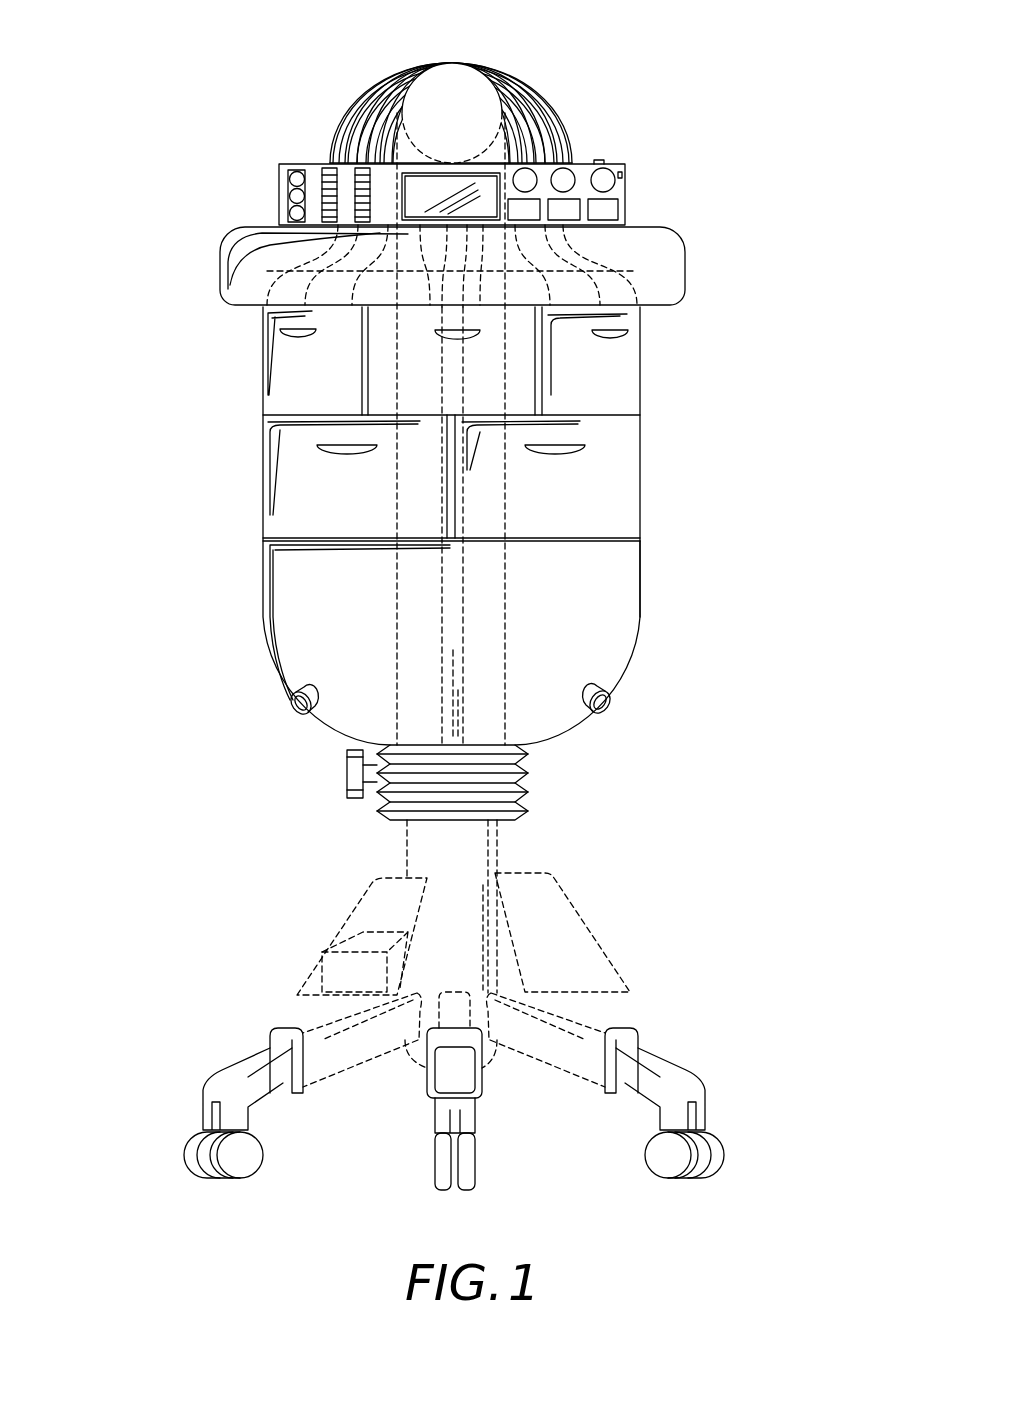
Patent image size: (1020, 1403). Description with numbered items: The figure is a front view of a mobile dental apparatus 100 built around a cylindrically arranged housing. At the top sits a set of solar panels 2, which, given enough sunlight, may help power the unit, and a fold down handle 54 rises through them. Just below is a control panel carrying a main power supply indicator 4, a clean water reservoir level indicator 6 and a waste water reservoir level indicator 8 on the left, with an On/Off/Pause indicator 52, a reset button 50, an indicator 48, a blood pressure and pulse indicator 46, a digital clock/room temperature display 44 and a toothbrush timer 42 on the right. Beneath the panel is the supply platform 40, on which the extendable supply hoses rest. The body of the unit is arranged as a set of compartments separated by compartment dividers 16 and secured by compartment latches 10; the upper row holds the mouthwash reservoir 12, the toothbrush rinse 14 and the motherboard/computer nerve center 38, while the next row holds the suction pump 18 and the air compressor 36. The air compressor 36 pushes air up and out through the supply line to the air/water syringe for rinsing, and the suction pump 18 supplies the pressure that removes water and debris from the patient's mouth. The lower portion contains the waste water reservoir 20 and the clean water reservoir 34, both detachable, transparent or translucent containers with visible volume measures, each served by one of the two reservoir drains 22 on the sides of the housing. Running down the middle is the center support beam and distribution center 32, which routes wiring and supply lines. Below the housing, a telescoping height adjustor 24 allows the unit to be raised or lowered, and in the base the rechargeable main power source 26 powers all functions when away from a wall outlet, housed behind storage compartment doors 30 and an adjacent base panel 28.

The mobile workstation 100 is at (205, 78).
The set of solar panels 2 is at (378, 100).
The fold down handle 54 is at (470, 82).
The main power supply indicator 4 is at (296, 178).
The clean water reservoir level indicator 6 is at (327, 194).
The waste water reservoir level indicator 8 is at (357, 212).
The On/Off/Pause indicator 52 is at (565, 178).
The reset button 50 is at (600, 160).
The indicator 48 is at (621, 175).
The blood pressure and pulse indicator 46 is at (530, 208).
The digital clock/room temperature display 44 is at (562, 210).
The toothbrush timer 42 is at (605, 213).
The supply platform 40 is at (655, 272).
The compartment latches 10 is at (290, 333).
The mouthwash reservoir 12 is at (300, 364).
The toothbrush rinse 14 is at (383, 372).
The compartment dividers 16 is at (365, 401).
The motherboard/computer nerve center 38 is at (615, 365).
The suction pump 18 is at (303, 477).
The air compressor 36 is at (615, 462).
The waste water reservoir 20 is at (305, 580).
The clean water reservoir 34 is at (615, 555).
The center support beam and distribution center 32 is at (487, 590).
The set of reservoir drains 22 is at (300, 707).
The height adjustor 24 is at (353, 775).
The storage compartment doors 30 is at (578, 932).
The rechargeable main power source 26 is at (340, 962).
The left base panel 28 is at (303, 990).